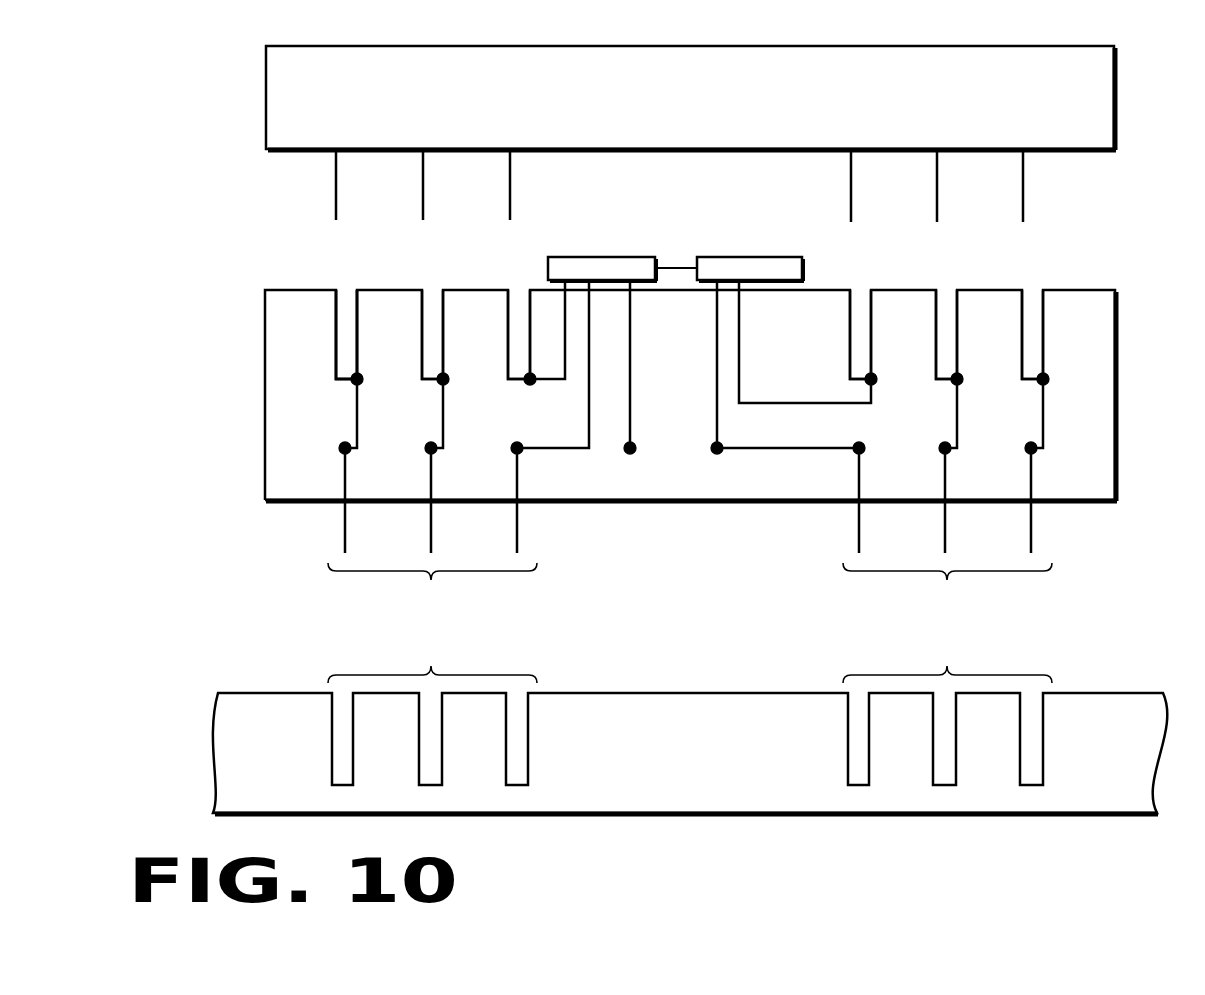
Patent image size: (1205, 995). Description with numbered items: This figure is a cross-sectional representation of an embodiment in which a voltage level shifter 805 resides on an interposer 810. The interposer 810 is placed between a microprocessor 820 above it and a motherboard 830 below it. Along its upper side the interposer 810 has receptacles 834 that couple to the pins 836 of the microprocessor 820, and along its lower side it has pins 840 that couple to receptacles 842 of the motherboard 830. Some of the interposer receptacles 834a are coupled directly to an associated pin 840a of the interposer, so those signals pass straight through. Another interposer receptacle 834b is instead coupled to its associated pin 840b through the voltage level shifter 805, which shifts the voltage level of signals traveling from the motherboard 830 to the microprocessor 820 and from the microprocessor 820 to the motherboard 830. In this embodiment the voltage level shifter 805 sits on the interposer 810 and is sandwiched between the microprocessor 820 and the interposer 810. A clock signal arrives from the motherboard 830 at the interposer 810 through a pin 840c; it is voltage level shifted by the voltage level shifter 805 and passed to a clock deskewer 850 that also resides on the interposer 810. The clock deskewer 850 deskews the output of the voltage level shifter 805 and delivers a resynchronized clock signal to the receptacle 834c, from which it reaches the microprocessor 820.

The microprocessor 820 is at (1105, 146).
The pins of the microprocessor 836 is at (334, 186).
The interposer 810 is at (1103, 495).
The receptacles 834 is at (352, 290).
The interposer receptacles 834a is at (336, 355).
The interposer receptacles 834b is at (508, 355).
The receptacle 834c is at (850, 355).
The voltage level shifter 805 is at (618, 257).
The clock deskewer 850 is at (768, 257).
The pins 840 is at (690, 588).
The pin of the interposer 840a is at (1029, 511).
The pin 840b is at (515, 511).
The pin 840c is at (855, 511).
The receptacles of the motherboard 842 is at (690, 662).
The motherboard 830 is at (1137, 809).